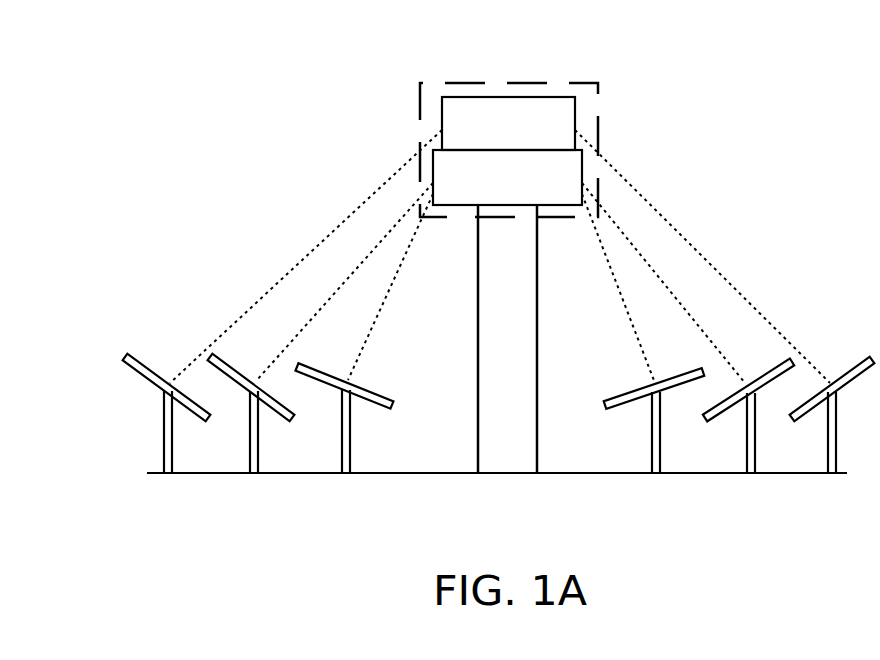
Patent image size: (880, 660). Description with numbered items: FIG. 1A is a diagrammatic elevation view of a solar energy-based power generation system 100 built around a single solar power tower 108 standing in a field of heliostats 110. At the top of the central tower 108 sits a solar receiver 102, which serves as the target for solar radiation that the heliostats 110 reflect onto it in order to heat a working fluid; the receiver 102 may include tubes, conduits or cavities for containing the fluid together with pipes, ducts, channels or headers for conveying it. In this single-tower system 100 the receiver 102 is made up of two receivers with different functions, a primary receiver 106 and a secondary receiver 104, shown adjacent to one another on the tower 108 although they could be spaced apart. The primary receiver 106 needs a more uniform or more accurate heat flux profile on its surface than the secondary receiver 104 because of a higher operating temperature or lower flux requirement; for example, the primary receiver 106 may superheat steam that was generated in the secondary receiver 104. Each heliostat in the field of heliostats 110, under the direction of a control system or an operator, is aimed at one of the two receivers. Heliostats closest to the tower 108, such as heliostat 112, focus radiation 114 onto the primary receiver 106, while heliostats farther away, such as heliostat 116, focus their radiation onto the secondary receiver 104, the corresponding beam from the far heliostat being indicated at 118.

The solar energy-based power generation system 100 is at (138, 58).
The solar receiver 102 is at (541, 121).
The secondary receiver 104 is at (529, 136).
The primary receiver 106 is at (529, 192).
The solar power tower 108 is at (537, 373).
The heliostats 110 is at (238, 361).
The heliostat 112 is at (372, 394).
The radiation 114 is at (306, 256).
The heliostat 116 is at (832, 362).
The communication link 118 is at (702, 241).